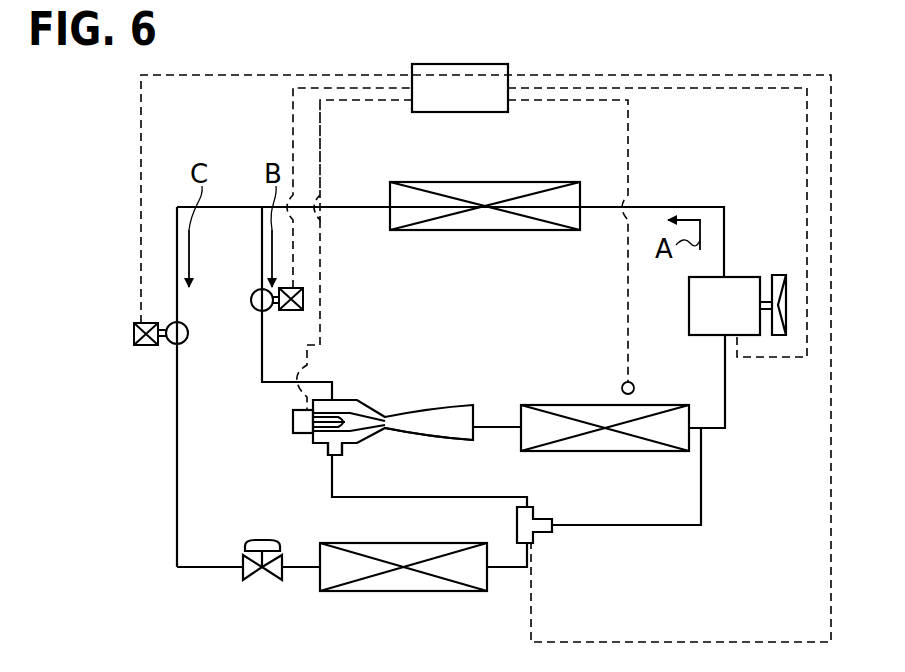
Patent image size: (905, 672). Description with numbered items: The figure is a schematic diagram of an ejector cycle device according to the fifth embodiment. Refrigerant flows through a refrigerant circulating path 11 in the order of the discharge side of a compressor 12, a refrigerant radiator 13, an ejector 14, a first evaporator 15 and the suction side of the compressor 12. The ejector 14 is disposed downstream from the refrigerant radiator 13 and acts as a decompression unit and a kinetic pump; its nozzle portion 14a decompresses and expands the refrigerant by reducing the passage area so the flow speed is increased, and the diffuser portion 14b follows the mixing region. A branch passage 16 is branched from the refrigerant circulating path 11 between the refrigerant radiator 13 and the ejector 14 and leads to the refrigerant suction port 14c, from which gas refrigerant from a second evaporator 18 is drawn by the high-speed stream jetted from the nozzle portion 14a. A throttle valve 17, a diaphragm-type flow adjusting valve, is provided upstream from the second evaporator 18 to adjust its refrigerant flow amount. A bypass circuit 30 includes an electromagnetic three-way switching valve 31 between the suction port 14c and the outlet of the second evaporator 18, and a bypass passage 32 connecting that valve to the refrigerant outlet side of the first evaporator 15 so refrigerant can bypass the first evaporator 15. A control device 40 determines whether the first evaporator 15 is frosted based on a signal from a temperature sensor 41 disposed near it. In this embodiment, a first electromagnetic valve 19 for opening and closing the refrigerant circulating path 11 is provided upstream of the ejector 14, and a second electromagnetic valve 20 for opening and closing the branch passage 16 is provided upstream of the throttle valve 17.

The refrigerant circulating path 11 is at (262, 357).
The compressor 12 is at (736, 277).
The refrigerant radiator 13 is at (476, 182).
The ejector 14 is at (391, 418).
The nozzle portion 14a is at (353, 415).
The diffuser portion 14b is at (440, 436).
The refrigerant suction port 14c is at (343, 450).
The first evaporator 15 is at (575, 405).
The branch passage 16 is at (177, 388).
The throttle valve 17 is at (260, 582).
The second evaporator 18 is at (405, 591).
The first electromagnetic valve 19 is at (262, 312).
The second electromagnetic valve 20 is at (134, 330).
The bypass circuit 30 is at (609, 568).
The electromagnetic three-way switching valve 31 is at (535, 540).
The bypass passage 32 is at (563, 583).
The control device 40 is at (480, 64).
The temperature sensor 41 is at (634, 385).